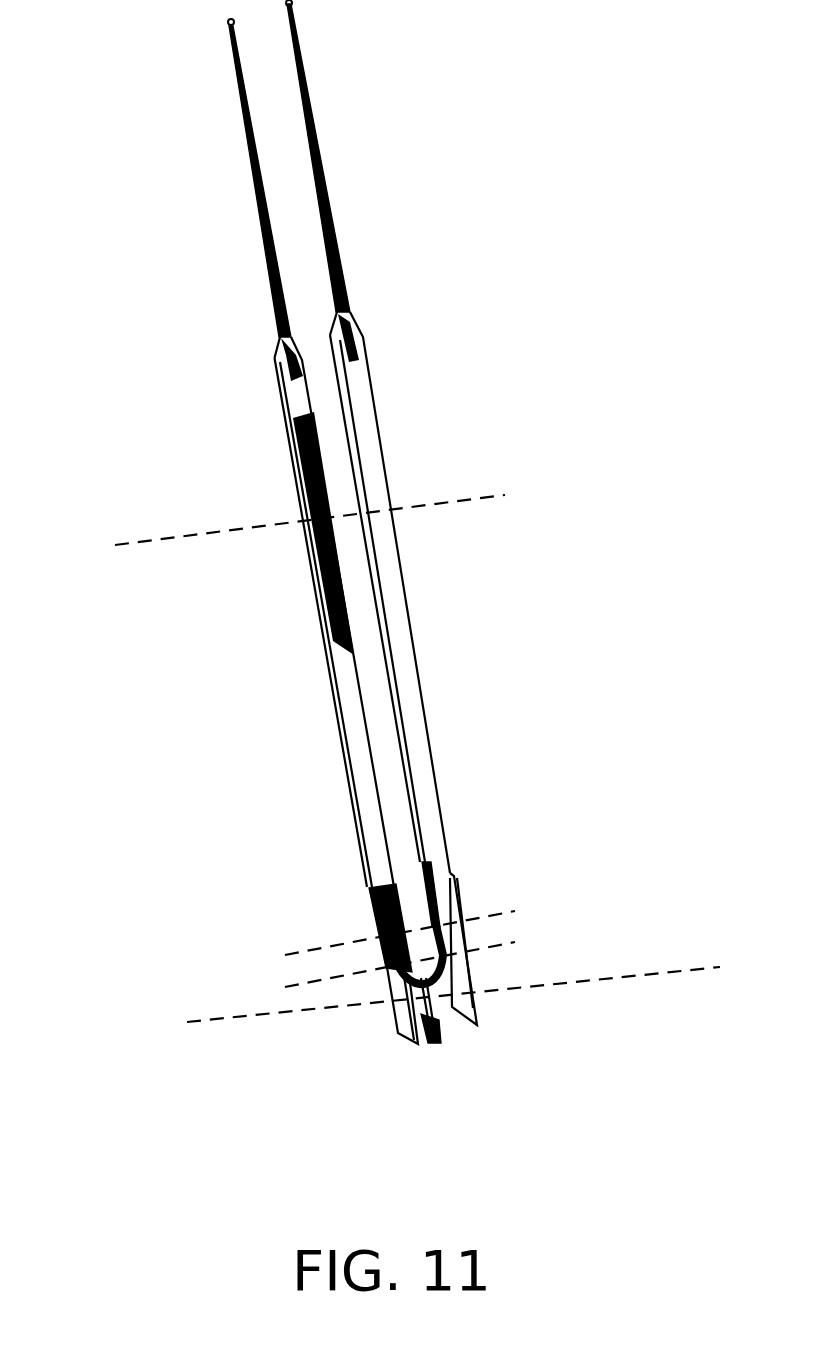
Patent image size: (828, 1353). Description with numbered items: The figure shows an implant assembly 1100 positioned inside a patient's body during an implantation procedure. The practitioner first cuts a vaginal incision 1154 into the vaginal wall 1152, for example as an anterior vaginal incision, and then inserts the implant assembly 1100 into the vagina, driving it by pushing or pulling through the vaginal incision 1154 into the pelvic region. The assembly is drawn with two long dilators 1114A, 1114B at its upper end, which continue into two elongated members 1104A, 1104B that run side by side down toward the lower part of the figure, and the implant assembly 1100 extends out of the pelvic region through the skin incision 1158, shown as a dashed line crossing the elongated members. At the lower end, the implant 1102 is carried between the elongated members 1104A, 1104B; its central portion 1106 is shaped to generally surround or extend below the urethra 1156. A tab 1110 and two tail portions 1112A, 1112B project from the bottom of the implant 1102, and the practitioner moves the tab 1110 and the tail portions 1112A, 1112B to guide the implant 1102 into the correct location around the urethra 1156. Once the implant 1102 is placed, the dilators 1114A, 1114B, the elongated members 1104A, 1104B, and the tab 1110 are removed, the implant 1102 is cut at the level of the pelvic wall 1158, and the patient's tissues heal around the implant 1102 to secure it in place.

The implant assembly 1100 is at (538, 413).
The implant 1102 is at (366, 935).
The elongated member 1104A is at (352, 797).
The elongated member 1104B is at (432, 748).
The central portion 1106 is at (432, 927).
The tab 1110 is at (435, 1042).
The tail portion 1112A is at (412, 1046).
The tail portion 1112B is at (478, 1020).
The dilator 1114A is at (265, 239).
The dilator 1114B is at (333, 212).
The vaginal wall 1152 is at (663, 970).
The vaginal incision 1154 is at (455, 1056).
The urethra 1156 is at (497, 935).
The skin incision 1158 is at (158, 535).